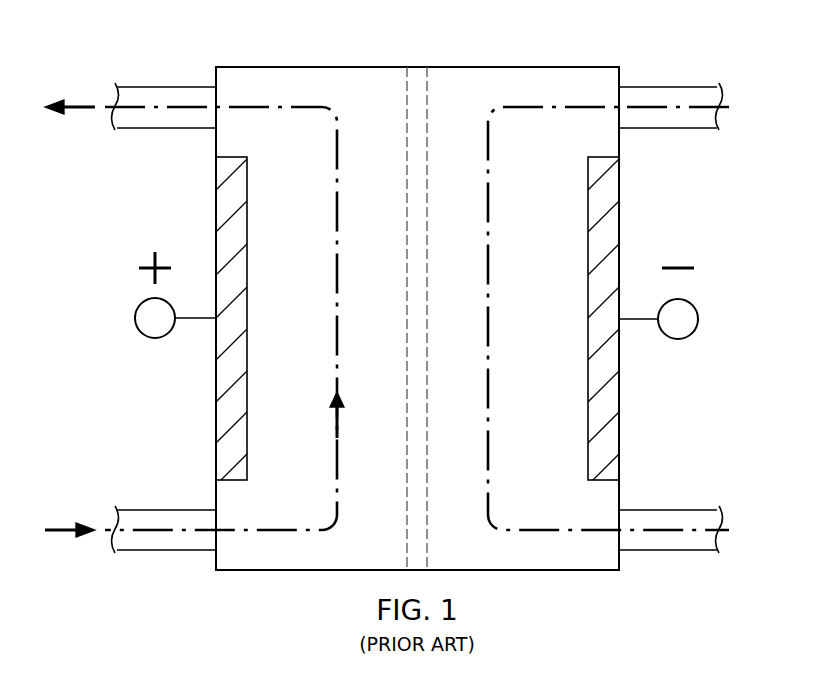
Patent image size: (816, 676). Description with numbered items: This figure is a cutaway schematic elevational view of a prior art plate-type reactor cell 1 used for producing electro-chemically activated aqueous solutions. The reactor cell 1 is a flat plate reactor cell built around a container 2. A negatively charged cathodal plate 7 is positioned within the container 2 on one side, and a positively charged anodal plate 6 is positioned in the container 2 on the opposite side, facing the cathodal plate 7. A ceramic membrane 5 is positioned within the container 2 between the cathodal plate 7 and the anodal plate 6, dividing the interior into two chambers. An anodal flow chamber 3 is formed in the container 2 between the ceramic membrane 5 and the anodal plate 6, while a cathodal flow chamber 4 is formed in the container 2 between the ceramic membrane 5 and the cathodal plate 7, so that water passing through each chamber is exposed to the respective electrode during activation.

The reactor cell 1 is at (387, 290).
The container 2 is at (315, 67).
The anodal flow chamber 3 is at (335, 470).
The cathodal flow chamber 4 is at (489, 470).
The ceramic membrane 5 is at (428, 512).
The anodal plate 6 is at (222, 211).
The cathodal plate 7 is at (611, 396).